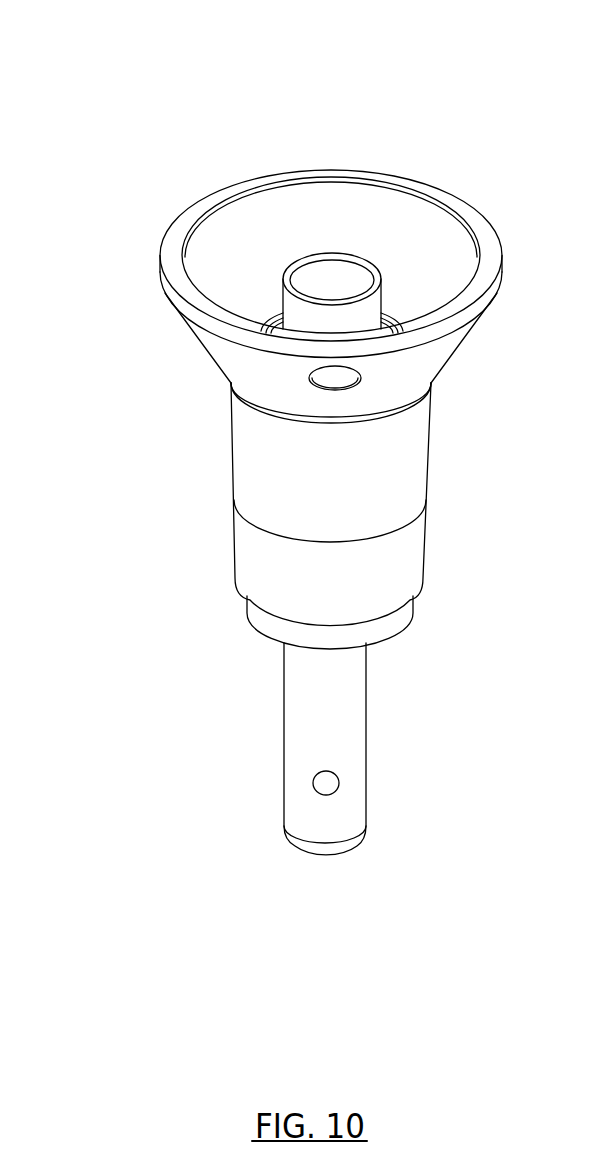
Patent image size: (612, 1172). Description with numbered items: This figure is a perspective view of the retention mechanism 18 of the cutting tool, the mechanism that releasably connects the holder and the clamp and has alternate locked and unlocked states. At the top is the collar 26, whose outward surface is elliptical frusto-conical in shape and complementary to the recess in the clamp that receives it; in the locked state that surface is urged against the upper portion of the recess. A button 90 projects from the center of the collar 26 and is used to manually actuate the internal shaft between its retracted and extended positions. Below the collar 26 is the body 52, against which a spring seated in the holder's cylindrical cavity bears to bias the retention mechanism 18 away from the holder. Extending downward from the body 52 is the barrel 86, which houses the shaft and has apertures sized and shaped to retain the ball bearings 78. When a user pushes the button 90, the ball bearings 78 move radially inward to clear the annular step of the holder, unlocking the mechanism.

The retention mechanism 18 is at (176, 202).
The collar 26 is at (428, 265).
The button 90 is at (332, 273).
The body 52 is at (268, 487).
The barrel 86 is at (310, 720).
The ball bearings 78 is at (326, 783).